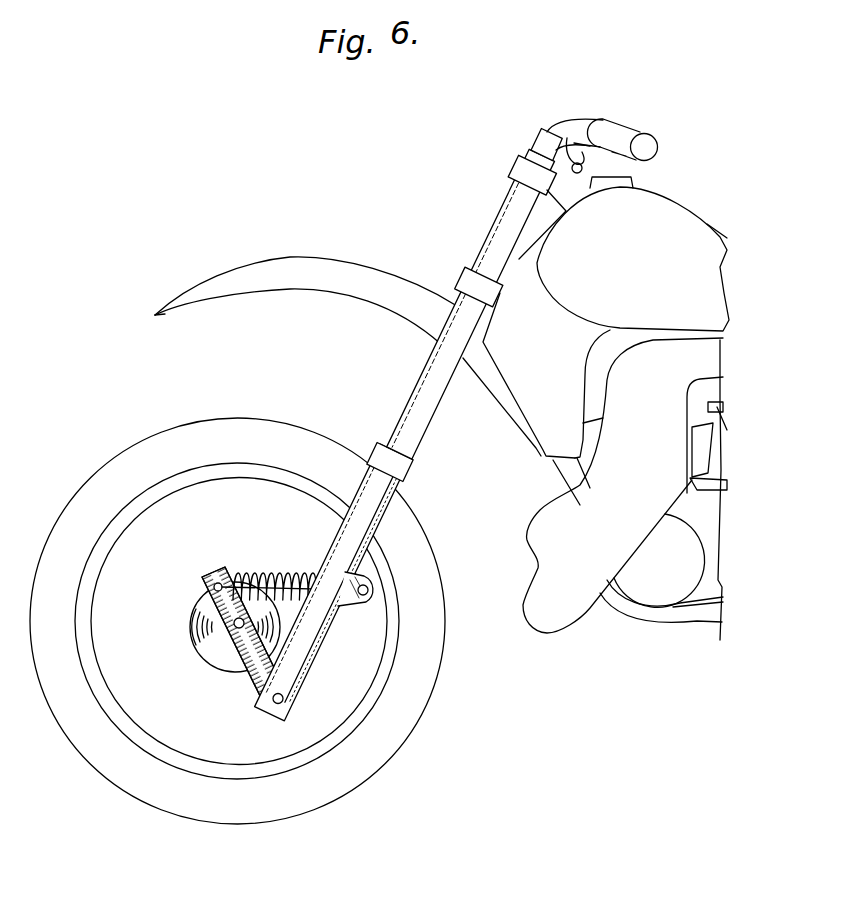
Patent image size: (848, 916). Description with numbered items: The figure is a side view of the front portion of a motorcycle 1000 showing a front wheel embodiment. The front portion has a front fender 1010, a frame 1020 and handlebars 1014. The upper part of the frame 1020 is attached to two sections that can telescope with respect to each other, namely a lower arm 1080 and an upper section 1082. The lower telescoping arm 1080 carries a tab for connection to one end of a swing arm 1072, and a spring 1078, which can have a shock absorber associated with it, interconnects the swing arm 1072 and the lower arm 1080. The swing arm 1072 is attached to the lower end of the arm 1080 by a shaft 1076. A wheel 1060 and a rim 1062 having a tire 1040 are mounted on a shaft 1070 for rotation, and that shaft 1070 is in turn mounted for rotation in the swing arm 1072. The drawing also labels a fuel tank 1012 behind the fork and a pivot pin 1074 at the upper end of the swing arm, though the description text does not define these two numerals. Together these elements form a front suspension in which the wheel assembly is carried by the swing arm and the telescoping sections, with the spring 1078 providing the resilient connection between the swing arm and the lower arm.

The front portion of a motorcycle 1000 is at (390, 182).
The front fender 1010 is at (280, 274).
The fuel tank 1012 is at (663, 263).
The handlebars 1014 is at (626, 132).
The frame 1020 is at (537, 228).
The tire 1040 is at (408, 541).
The wheel 1060 is at (213, 650).
The rim 1062 is at (136, 518).
The shaft 1070 is at (236, 621).
The swing arm 1072 is at (217, 582).
The pivot pin 1074 is at (222, 584).
The shaft 1076 is at (282, 703).
The spring 1078 is at (251, 578).
The lower telescoping arm 1080 is at (372, 516).
The telescoping section 1082 is at (431, 392).